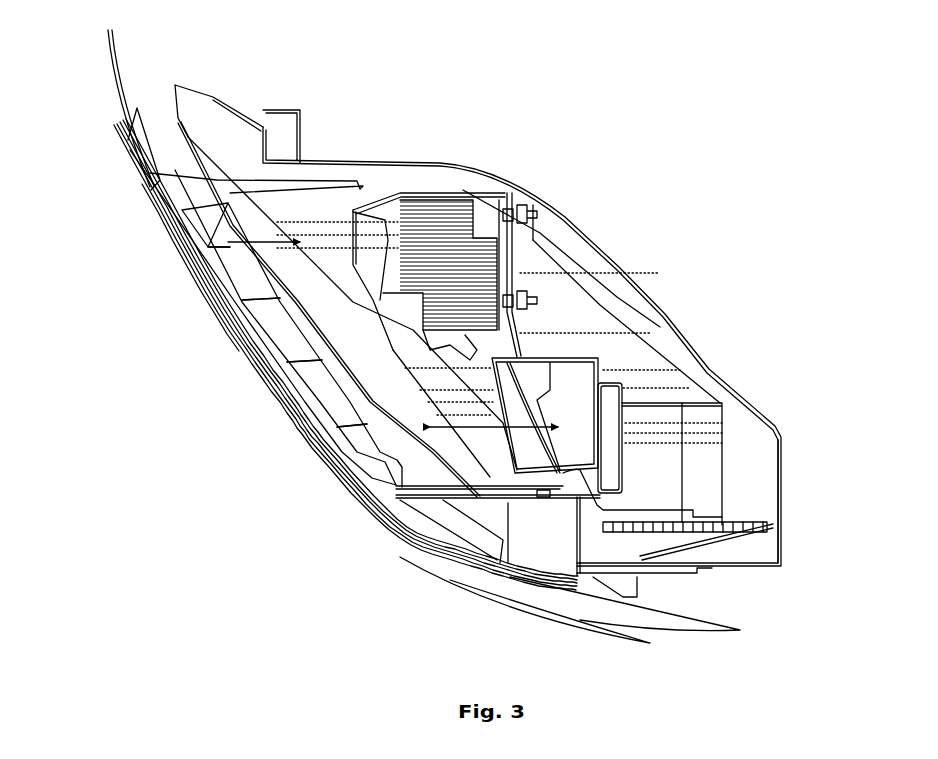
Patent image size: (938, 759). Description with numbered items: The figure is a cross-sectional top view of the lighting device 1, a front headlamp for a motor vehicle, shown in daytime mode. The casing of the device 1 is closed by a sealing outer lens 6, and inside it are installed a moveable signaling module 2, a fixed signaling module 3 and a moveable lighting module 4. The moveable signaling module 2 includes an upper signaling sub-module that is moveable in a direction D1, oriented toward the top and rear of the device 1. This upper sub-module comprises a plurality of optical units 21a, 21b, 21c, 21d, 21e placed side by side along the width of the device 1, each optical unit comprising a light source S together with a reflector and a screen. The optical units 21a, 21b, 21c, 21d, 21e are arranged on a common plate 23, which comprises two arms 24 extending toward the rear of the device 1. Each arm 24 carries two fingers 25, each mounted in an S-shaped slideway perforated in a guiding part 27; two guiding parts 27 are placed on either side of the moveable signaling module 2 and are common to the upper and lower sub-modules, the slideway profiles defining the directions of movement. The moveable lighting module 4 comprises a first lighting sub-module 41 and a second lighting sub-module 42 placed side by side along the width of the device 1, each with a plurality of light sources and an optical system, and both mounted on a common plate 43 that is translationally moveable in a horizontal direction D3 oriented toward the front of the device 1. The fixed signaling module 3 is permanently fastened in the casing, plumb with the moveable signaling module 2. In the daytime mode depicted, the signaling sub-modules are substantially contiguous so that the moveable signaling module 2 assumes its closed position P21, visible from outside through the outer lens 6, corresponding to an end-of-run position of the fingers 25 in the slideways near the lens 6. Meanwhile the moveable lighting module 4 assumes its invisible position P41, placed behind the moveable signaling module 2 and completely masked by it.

The lighting device 1 is at (302, 60).
The moveable signaling module 2 is at (373, 505).
The optical unit 21a is at (203, 227).
The optical unit 21b is at (203, 273).
The optical unit 21c is at (227, 323).
The optical unit 21d is at (253, 377).
The optical unit 21e is at (305, 442).
The common plate 23 is at (433, 477).
The arm 24 is at (300, 187).
The finger 25 is at (682, 532).
The guiding part 27 is at (390, 165).
The fixed signaling module 3 is at (543, 557).
The moveable lighting module 4 is at (522, 203).
The first lighting sub-module 41 is at (393, 207).
The second lighting sub-module 42 is at (600, 367).
The common plate 43 is at (540, 310).
The outer lens 6 is at (343, 480).
The closed position P21 is at (228, 242).
The invisible position P41 is at (560, 427).
The direction D1 is at (264, 254).
The direction D3 is at (494, 440).
The light source S is at (782, 487).